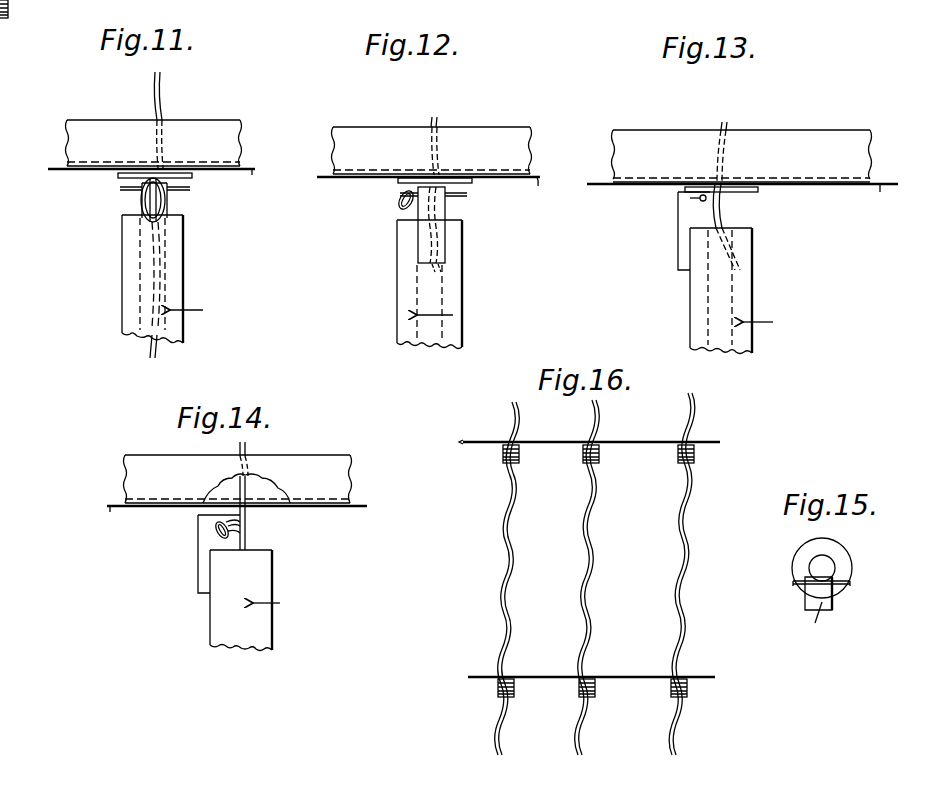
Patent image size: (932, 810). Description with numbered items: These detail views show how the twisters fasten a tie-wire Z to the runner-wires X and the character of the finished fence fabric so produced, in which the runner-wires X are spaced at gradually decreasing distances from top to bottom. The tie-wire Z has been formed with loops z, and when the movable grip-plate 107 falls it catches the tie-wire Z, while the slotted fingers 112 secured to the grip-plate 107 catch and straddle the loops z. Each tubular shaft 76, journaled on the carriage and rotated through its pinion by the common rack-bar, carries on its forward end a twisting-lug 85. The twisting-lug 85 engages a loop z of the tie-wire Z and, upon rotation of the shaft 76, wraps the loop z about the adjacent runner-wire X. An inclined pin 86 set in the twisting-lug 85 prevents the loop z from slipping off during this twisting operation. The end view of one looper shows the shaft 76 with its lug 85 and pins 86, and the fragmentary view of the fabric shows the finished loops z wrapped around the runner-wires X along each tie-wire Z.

In FIG. 11, the tubular shaft 76 is at (175, 285).
In FIG. 12, the tubular shaft 76 is at (460, 292).
In FIG. 13, the tubular shaft 76 is at (690, 293).
In FIG. 14, the tubular shaft 76 is at (245, 563).
In FIG. 15, the tubular shaft 76 is at (803, 549).
In FIG. 11, the twisting-lug 85 is at (167, 217).
In FIG. 12, the twisting-lug 85 is at (425, 240).
In FIG. 13, the twisting-lug 85 is at (682, 233).
In FIG. 14, the twisting-lug 85 is at (205, 527).
In FIG. 15, the twisting-lug 85 is at (823, 595).
In FIG. 11, the inclined pin 86 is at (122, 192).
In FIG. 12, the inclined pin 86 is at (400, 195).
In FIG. 13, the inclined pin 86 is at (700, 197).
In FIG. 14, the inclined pin 86 is at (218, 537).
In FIG. 15, the inclined pin 86 is at (793, 584).
In FIG. 11, the movable grip-plate 107 is at (154, 143).
In FIG. 12, the movable grip-plate 107 is at (432, 150).
In FIG. 13, the movable grip-plate 107 is at (742, 156).
In FIG. 14, the movable grip-plate 107 is at (238, 479).
In FIG. 11, the slotted finger 112 is at (120, 177).
In FIG. 12, the slotted finger 112 is at (400, 182).
In FIG. 13, the slotted finger 112 is at (750, 192).
In FIG. 11, the runner-wire X is at (170, 95).
In FIG. 12, the runner-wire X is at (440, 118).
In FIG. 13, the runner-wire X is at (730, 124).
In FIG. 14, the runner-wire X is at (247, 445).
In FIG. 16, the runner-wire X is at (585, 505).
In FIG. 11, the tie-wire Z is at (155, 185).
In FIG. 12, the tie-wire Z is at (438, 194).
In FIG. 13, the tie-wire Z is at (742, 204).
In FIG. 14, the tie-wire Z is at (224, 524).
In FIG. 16, the tie-wire Z is at (543, 443).
In FIG. 11, the loop z is at (170, 203).
In FIG. 12, the loop z is at (405, 207).
In FIG. 13, the loop z is at (712, 205).
In FIG. 14, the loop z is at (247, 530).
In FIG. 16, the loop z is at (503, 462).